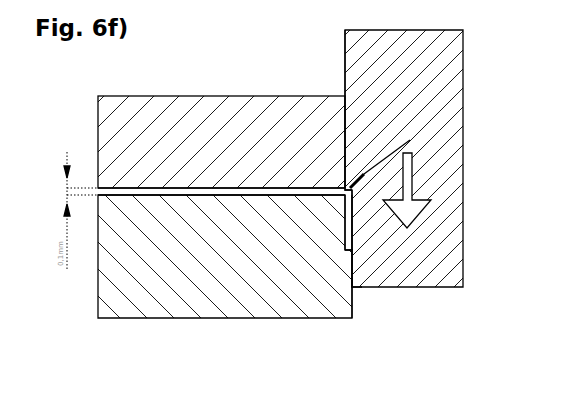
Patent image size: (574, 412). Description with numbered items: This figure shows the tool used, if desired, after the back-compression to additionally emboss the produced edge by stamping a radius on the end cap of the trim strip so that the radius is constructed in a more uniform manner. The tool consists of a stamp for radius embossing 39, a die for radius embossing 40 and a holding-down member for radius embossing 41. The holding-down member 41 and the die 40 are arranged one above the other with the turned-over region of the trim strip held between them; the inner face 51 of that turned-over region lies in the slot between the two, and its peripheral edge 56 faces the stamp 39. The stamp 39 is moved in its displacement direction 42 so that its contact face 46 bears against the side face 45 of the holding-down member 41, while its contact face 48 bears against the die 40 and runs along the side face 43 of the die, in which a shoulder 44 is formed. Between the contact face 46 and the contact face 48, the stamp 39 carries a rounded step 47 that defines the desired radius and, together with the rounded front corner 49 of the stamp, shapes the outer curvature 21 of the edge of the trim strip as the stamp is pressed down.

The outer curvature 21 is at (347, 188).
The stamp for radius embossing 39 is at (405, 276).
The dies for radius embossing 40 is at (210, 308).
The holding-down member for radius embossing 41 is at (200, 110).
The displacement direction of stamp 42 is at (411, 175).
The side face of die 43 is at (352, 289).
The shoulder in side face of die 44 is at (349, 250).
The side face of holding-down member 45 is at (345, 137).
The contact face of stamp with holding-down member side face 46 is at (345, 63).
The rounded step for desired radius 47 is at (410, 140).
The contact face of stamp with die 48 is at (353, 265).
The rounded front corner of stamp 49 is at (352, 288).
The inner face of turned-over region 51 is at (345, 210).
The peripheral edge of turned-over region 56 is at (349, 250).